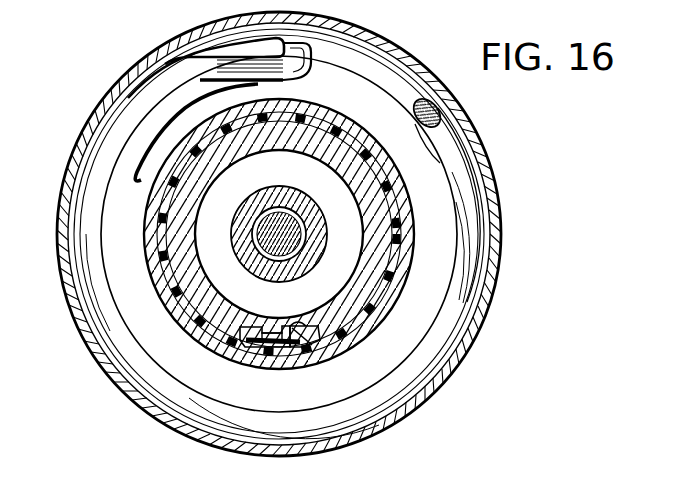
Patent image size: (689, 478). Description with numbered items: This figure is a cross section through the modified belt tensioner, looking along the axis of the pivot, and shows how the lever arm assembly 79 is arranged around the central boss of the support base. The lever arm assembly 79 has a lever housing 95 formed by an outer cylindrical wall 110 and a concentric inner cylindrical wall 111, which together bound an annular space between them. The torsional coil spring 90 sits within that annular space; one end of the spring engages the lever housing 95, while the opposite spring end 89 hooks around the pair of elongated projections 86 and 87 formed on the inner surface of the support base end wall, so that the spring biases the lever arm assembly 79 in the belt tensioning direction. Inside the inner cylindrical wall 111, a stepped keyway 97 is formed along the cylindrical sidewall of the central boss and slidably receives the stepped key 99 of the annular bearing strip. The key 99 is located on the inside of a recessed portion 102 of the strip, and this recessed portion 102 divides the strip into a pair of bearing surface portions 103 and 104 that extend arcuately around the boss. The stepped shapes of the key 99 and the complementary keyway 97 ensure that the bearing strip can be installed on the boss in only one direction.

The lever arm assembly 79 is at (486, 337).
The outer cylindrical wall 110 is at (492, 250).
The lever housing 95 is at (100, 385).
The torsional coil spring 90 is at (446, 137).
The bearing surface portion 104 is at (181, 333).
The inner cylindrical wall 111 is at (400, 190).
The bearing surface portion 103 is at (358, 332).
The elongated projection 86 is at (237, 43).
The spring end 89 is at (300, 48).
The elongated projection 87 is at (160, 118).
The stepped key 99 is at (246, 345).
The recessed portion 102 is at (294, 350).
The stepped keyway 97 is at (312, 348).